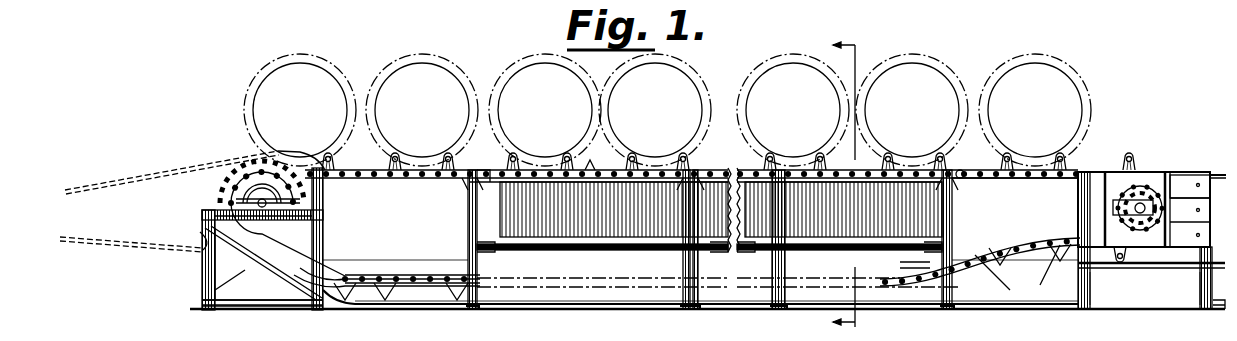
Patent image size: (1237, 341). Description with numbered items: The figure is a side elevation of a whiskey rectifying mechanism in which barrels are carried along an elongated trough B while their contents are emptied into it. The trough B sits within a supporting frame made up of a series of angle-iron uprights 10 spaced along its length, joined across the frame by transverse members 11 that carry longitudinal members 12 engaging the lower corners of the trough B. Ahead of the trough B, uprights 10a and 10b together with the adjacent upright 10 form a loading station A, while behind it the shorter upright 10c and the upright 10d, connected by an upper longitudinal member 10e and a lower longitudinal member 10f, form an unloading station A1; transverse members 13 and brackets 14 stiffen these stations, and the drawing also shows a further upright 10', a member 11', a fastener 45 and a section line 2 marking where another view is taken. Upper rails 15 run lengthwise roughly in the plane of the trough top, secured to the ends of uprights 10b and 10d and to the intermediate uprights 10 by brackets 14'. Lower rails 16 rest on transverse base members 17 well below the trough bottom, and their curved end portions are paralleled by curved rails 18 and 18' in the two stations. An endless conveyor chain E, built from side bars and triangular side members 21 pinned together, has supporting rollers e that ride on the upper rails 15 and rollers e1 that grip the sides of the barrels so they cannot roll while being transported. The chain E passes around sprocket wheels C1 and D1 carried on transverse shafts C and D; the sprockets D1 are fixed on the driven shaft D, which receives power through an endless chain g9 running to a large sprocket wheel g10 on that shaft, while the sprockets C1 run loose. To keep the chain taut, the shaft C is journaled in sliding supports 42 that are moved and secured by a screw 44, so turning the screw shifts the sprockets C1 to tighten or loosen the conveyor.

The section line 2- 2 is at (863, 186).
The uprights 10 is at (703, 239).
The intermediate frame upright 10' is at (673, 239).
The upright 10a is at (1200, 272).
The upright 10b is at (1090, 290).
The upright 10c is at (202, 282).
The upright 10d is at (323, 234).
The upper longitudinal member 10e is at (323, 215).
The lower longitudinal member 10f is at (264, 305).
The transverse members 11 is at (709, 255).
The bracket 11' is at (915, 256).
The longitudinal members 12 is at (600, 250).
The transverse members 13 is at (198, 233).
The brackets 14 is at (765, 207).
The brackets 14' is at (705, 179).
The upper rails 15 is at (478, 172).
The lower rails 16 is at (446, 306).
The transversely extending members 17 is at (482, 310).
The rail 18 is at (980, 261).
The rail 18' is at (407, 275).
The triangular side members 21 is at (958, 170).
The sliding supports 42 is at (1113, 213).
The screw 44 is at (1190, 186).
The shaft 45 is at (1137, 217).
The loading station A is at (1015, 234).
The unloading station A1 is at (395, 232).
The trough B is at (721, 209).
The shaft C is at (1143, 200).
The sprocket wheel C1 is at (1170, 175).
The shaft D is at (215, 199).
The sprocket wheel D1 is at (320, 196).
The endless traveling conveyor chain E is at (592, 174).
The supporting rollers e is at (420, 190).
The rollers e1 is at (432, 144).
The endless chain g9 is at (130, 178).
The sprocket wheel g10 is at (232, 170).